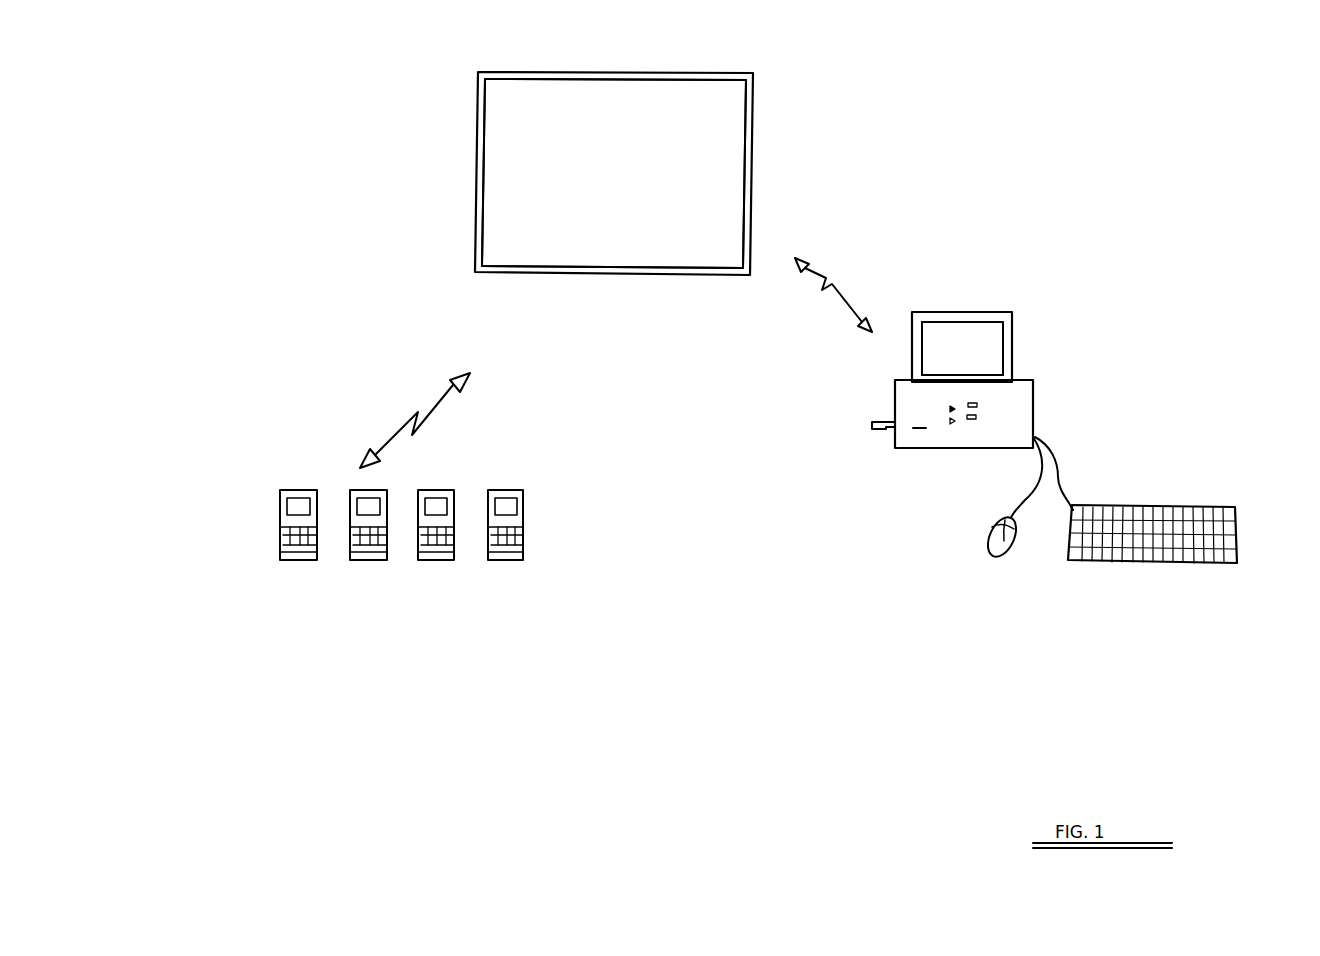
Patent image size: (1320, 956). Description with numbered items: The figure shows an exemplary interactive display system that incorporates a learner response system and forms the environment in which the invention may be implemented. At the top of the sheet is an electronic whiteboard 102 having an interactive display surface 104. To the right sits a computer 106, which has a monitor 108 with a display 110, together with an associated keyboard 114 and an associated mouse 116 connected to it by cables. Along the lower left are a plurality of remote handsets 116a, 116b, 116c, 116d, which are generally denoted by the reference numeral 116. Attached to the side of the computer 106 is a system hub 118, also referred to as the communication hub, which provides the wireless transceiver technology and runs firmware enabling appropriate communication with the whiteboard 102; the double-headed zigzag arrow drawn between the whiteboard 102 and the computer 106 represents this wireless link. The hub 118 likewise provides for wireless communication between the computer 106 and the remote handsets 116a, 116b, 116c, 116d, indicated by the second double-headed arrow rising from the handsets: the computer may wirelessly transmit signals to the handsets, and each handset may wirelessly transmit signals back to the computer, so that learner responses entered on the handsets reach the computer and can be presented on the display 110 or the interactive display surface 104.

The electronic whiteboard 102 is at (755, 77).
The interactive display surface 104 is at (568, 214).
The computer 106 is at (1033, 388).
The monitor 108 is at (1013, 327).
The display 110 is at (958, 353).
The keyboard 114 is at (1237, 550).
The mouse 116 is at (998, 562).
The remote handset 116a is at (293, 565).
The remote handset 116b is at (360, 565).
The remote handset 116c is at (433, 565).
The remote handset 116d is at (497, 565).
The system hub 118 is at (883, 430).